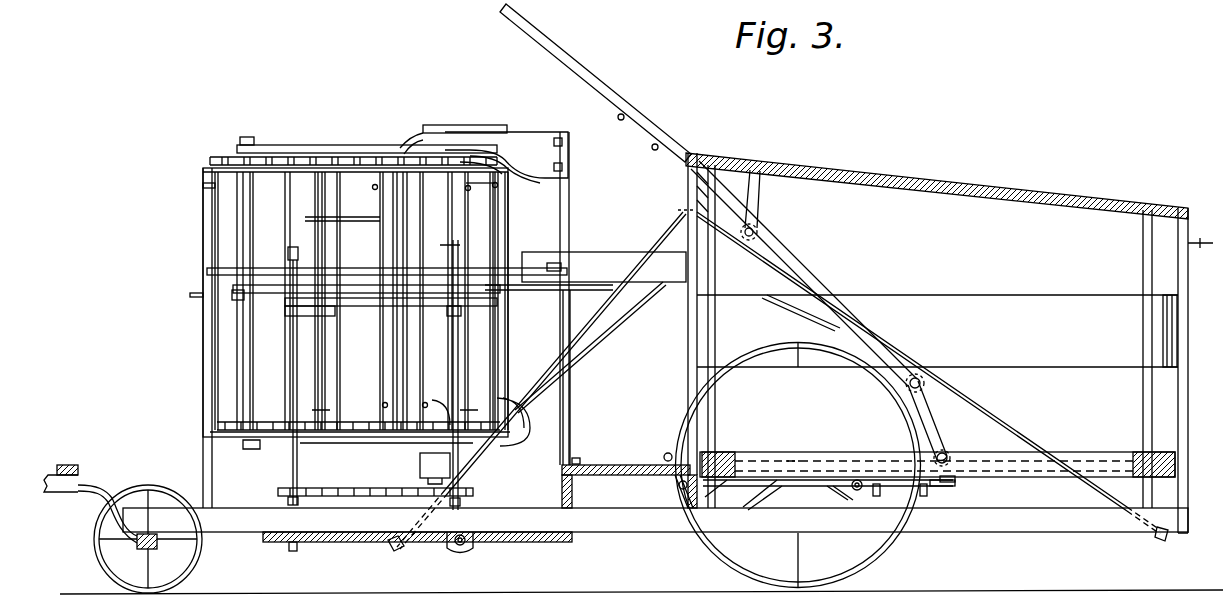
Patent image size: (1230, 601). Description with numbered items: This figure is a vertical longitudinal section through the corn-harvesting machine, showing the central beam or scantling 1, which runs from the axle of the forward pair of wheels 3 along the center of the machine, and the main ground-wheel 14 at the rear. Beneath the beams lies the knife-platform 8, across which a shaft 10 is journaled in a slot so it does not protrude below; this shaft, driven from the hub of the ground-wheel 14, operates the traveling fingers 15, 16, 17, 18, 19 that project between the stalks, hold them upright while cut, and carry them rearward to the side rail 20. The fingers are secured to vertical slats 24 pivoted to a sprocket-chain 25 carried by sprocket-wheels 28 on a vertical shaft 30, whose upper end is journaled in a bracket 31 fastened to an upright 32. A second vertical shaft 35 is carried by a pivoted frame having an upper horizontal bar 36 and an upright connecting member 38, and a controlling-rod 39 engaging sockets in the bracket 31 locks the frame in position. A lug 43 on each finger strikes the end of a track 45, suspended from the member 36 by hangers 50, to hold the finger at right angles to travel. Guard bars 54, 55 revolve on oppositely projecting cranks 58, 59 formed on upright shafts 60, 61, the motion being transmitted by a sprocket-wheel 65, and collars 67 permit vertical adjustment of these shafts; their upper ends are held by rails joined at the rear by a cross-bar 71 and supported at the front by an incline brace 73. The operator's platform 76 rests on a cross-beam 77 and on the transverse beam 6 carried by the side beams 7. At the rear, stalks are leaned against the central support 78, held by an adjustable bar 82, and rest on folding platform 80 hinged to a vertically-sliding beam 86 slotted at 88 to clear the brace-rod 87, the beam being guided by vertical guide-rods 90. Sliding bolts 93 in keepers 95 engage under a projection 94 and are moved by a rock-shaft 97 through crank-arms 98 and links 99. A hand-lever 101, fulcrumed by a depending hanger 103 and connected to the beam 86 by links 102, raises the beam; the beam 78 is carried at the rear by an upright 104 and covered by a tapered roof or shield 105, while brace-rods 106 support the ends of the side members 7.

The beam or scantling 1 is at (653, 535).
The forward pair of wheels 3 is at (150, 485).
The transverse beam 6 is at (692, 516).
The side beams 7 is at (577, 460).
The knife-platform 8 is at (368, 541).
The shaft 10 is at (455, 547).
The main ground-wheels 14 is at (900, 548).
The traveling finger 15 is at (199, 192).
The traveling finger 16 is at (223, 186).
The traveling finger 17 is at (320, 408).
The traveling finger 18 is at (498, 185).
The traveling finger 19 is at (372, 187).
The side board or rail 20 is at (614, 253).
The vertical slats 24 is at (203, 388).
The sprocket-chain 25 is at (305, 178).
The sprocket-wheels 28 is at (432, 401).
The vertical shaft 30 is at (450, 243).
The bracket 31 is at (523, 136).
The upright 32 is at (566, 212).
The vertical shaft 35 is at (262, 301).
The upper horizontal bar 36 is at (314, 146).
The upright connecting member 38 is at (514, 239).
The controlling-rod 39 is at (467, 118).
The lug or projection 43 is at (190, 296).
The track 45 is at (232, 300).
The hangers 50 is at (376, 218).
The bar 54 is at (360, 307).
The bar 55 is at (348, 270).
The crank 58 is at (312, 317).
The crank 59 is at (270, 294).
The upright shaft 60 is at (291, 551).
The upright shaft 61 is at (453, 353).
The sprocket-wheel 65 is at (360, 489).
The collar 67 is at (288, 501).
The cross-bar 71 is at (562, 268).
The incline brace 73 is at (210, 461).
The operator's platform 76 is at (605, 465).
The cross-beam 77 is at (580, 510).
The central support or beam 78 is at (935, 184).
The folding platform 80 is at (790, 461).
The adjustable bar 82 is at (1200, 233).
The vertically-sliding beam 86 is at (1137, 452).
The brace-rod 87 is at (520, 412).
The slot 88 is at (843, 452).
The vertical guide-rods 90 is at (714, 346).
The sliding bolts 93 is at (937, 490).
The projection 94 is at (957, 481).
The keepers 95 is at (917, 496).
The rock-shaft 97 is at (666, 455).
The depending crank-arm 98 is at (678, 485).
The link 99 is at (783, 490).
The hand-lever 101 is at (583, 78).
The links 102 is at (932, 405).
The depending hanger 103 is at (753, 206).
The upright 104 is at (1183, 392).
The roof or shield 105 is at (937, 302).
The brace-rods 106 is at (598, 338).